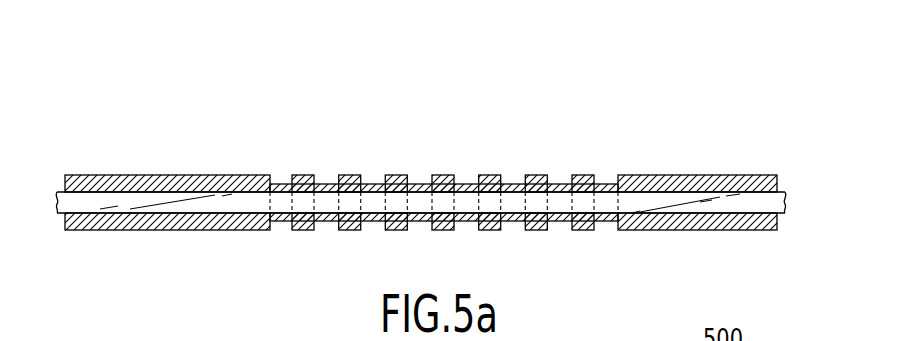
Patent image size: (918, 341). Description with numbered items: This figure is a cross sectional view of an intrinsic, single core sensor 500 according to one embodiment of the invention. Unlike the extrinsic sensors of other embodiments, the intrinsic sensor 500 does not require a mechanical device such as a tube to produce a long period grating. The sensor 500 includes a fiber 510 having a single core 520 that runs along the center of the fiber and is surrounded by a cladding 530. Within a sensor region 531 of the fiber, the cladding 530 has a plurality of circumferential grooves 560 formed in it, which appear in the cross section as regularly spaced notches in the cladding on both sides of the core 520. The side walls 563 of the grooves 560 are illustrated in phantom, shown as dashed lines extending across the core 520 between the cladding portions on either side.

The intrinsic single core sensor 500 is at (689, 99).
The fiber 510 is at (231, 238).
The single core 520 is at (163, 198).
The cladding 530 is at (722, 177).
The sensor region 531 is at (620, 92).
The circumferential grooves 560 is at (285, 175).
The side walls 563 is at (270, 203).